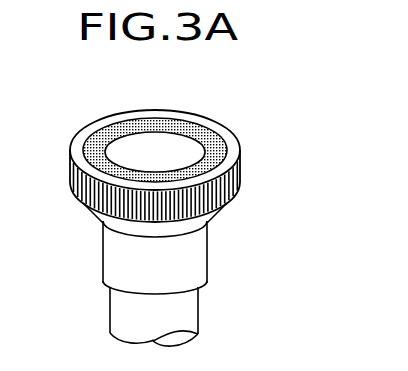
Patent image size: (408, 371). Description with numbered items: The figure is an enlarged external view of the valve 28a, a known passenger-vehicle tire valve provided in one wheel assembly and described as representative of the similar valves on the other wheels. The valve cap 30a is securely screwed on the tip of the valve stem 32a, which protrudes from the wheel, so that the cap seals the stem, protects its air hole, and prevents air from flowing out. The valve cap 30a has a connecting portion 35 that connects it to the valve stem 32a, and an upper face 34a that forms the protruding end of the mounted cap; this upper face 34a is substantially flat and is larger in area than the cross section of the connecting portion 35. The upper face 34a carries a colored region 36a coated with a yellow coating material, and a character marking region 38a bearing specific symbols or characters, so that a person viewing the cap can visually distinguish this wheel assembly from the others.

The valve 28a is at (195, 203).
The valve cap 30a is at (187, 144).
The valve stem 32a is at (194, 312).
The upper face 34a is at (96, 118).
The connecting portion 35 is at (213, 262).
The colored region 36a is at (208, 130).
The character marking region 38a is at (189, 147).